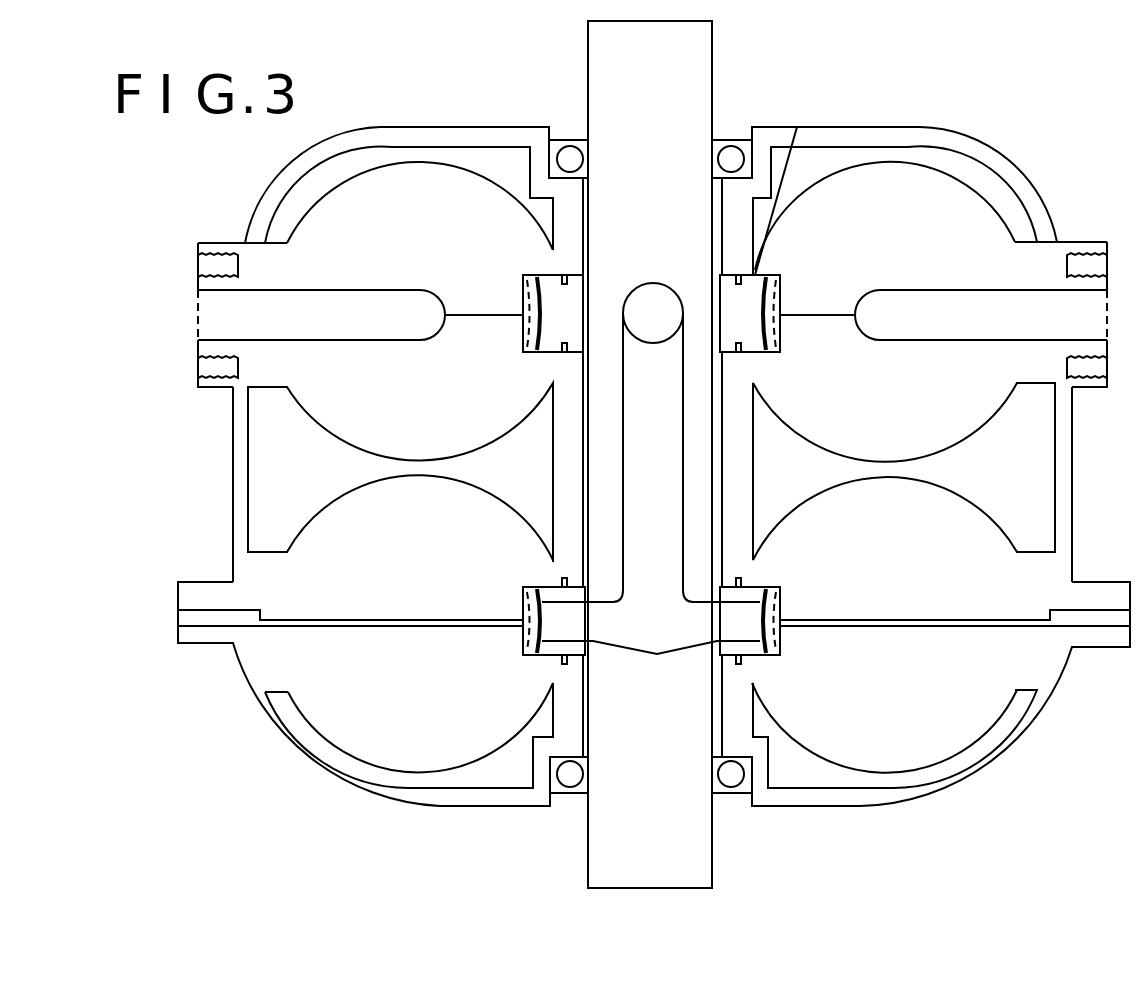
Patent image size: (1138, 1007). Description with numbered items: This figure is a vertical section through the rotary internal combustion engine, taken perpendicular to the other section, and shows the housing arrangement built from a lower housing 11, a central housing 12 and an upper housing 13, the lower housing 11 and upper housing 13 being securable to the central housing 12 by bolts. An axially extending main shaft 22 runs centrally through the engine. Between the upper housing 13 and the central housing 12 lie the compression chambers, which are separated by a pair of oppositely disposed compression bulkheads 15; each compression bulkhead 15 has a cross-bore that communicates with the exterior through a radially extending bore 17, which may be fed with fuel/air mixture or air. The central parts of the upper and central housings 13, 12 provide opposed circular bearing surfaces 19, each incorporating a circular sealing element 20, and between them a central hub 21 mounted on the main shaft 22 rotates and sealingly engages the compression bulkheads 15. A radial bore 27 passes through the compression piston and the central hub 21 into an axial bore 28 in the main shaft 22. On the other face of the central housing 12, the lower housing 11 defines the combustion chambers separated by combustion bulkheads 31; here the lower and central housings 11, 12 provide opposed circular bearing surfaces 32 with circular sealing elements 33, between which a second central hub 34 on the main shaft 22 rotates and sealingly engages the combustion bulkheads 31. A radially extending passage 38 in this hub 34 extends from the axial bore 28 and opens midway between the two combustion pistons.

The lower housing 11 is at (1046, 719).
The central housing 12 is at (1073, 458).
The upper housing 13 is at (1033, 205).
The compression bulkhead 15 is at (396, 210).
The radially extending bore 17 is at (295, 334).
The circular bearing surface 19 is at (740, 355).
The circular sealing element 20 is at (566, 355).
The central hub 21 is at (548, 331).
The main shaft 22 is at (636, 80).
The radial bore 27 is at (638, 328).
The axial bore 28 is at (638, 429).
The combustion bulkhead 31 is at (405, 575).
The circular bearing surface 32 is at (735, 586).
The circular sealing element 33 is at (565, 586).
The central hub 34 is at (556, 586).
The radially extending passage 38 is at (555, 635).